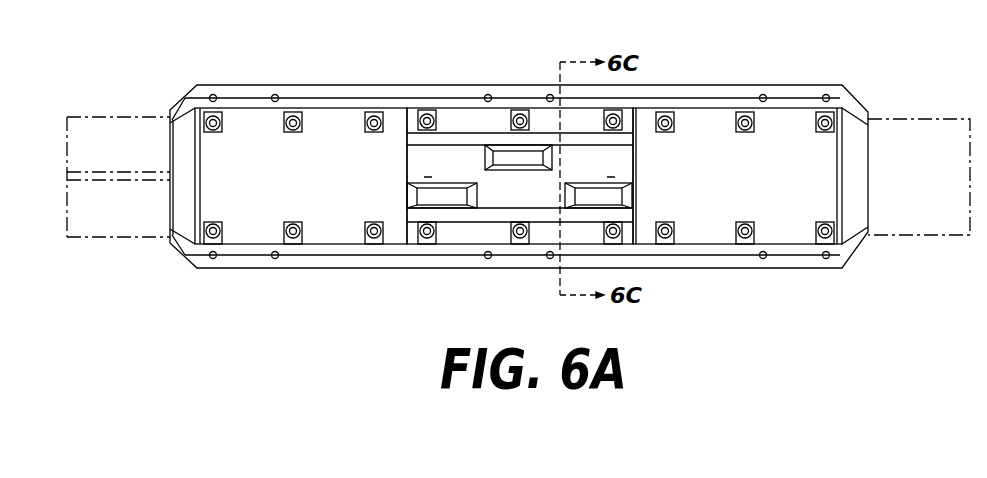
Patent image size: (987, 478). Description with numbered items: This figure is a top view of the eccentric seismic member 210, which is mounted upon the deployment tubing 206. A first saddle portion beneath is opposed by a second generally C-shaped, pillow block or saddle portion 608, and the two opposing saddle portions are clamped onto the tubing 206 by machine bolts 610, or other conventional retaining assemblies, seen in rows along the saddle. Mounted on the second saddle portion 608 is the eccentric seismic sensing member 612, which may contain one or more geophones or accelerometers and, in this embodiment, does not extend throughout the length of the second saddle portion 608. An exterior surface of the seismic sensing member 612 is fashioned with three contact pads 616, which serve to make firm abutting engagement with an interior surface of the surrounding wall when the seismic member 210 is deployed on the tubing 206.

The deployment tubing 206 is at (913, 238).
The eccentric seismic member 210 is at (866, 90).
The second saddle portion 608 is at (311, 188).
The machine bolts 610 is at (750, 116).
The eccentric seismic sensing member 612 is at (442, 118).
The contact pads 616 is at (516, 158).